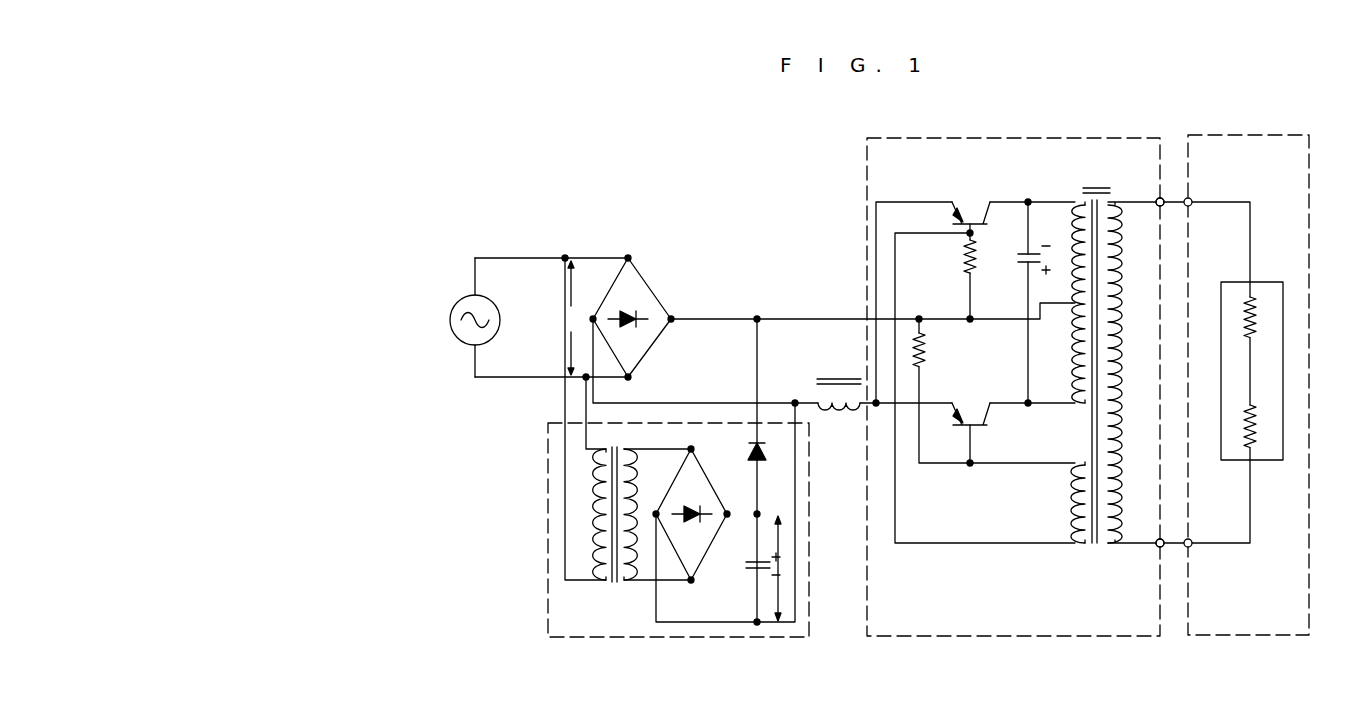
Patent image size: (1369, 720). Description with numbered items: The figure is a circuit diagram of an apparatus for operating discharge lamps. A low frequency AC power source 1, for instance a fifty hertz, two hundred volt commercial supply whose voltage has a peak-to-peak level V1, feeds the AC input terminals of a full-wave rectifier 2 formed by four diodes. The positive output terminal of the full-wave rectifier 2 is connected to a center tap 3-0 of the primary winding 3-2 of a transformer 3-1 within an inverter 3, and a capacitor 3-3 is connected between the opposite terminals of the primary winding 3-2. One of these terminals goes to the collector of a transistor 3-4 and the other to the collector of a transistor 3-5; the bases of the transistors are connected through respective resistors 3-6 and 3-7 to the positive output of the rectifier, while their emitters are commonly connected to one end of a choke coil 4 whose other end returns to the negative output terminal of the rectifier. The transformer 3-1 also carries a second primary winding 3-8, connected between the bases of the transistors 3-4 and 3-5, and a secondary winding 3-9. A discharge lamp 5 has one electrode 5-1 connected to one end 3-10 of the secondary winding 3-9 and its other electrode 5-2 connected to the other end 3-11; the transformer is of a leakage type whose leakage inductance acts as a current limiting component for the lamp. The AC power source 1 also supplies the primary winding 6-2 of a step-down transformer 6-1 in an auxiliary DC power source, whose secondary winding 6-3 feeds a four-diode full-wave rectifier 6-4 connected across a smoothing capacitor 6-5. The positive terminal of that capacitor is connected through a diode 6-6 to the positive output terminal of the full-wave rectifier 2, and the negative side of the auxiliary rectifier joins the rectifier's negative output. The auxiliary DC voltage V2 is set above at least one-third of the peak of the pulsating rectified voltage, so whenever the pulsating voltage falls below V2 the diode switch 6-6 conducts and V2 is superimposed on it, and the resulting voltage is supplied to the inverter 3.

The AC power source 1 is at (453, 306).
The full-wave rectifier 2 is at (646, 290).
The peak-to-peak level of AC voltage V1 is at (577, 318).
The inverter 3 is at (937, 146).
The choke coil 4 is at (828, 374).
The discharge lamp 5 is at (1284, 306).
The electrode 5-1 is at (1254, 330).
The electrode 5-2 is at (1254, 418).
The step-down transformer 6-1 is at (612, 436).
The primary winding 6-2 is at (592, 557).
The secondary winding 6-3 is at (637, 570).
The full-wave rectifier 6-4 is at (702, 482).
The smoothing capacitor 6-5 is at (745, 568).
The diode switch 6-6 is at (768, 454).
The DC voltage V2 is at (783, 568).
The center tap 3-0 is at (1068, 318).
The transformer 3-1 is at (1105, 544).
The primary winding 3-2 is at (1072, 204).
The capacitor 3-3 is at (1001, 255).
The transistor 3-4 is at (975, 203).
The transistor 3-5 is at (972, 408).
The resistor 3-6 is at (964, 266).
The resistor 3-7 is at (924, 350).
The second primary winding 3-8 is at (1072, 536).
The secondary winding 3-9 is at (1118, 204).
The end of secondary winding 3-10 is at (1163, 200).
The end of secondary winding 3-11 is at (1163, 546).